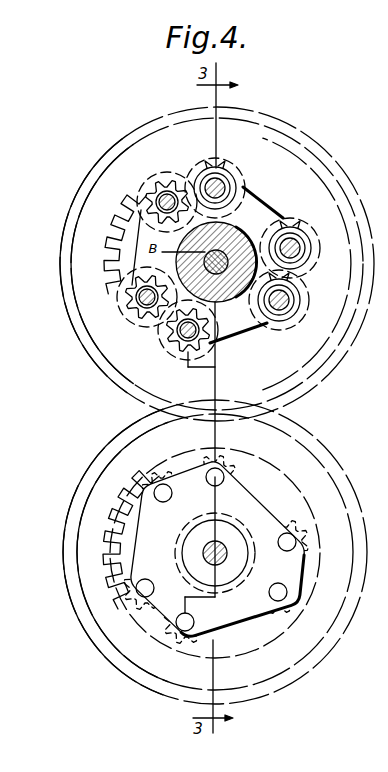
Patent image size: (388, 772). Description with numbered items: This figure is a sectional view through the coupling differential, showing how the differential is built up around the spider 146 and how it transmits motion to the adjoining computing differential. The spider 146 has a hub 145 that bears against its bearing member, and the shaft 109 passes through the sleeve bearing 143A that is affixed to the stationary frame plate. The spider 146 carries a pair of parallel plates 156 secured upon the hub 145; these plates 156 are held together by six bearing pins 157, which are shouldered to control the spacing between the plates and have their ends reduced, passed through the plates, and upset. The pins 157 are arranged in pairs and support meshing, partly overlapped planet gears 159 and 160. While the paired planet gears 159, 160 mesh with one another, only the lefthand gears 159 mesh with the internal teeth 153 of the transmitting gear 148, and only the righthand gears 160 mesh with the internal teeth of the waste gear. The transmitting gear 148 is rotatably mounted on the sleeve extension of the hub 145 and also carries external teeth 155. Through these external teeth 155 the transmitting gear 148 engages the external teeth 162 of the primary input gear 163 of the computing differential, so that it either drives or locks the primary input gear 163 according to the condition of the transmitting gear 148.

The shaft 109 is at (203, 548).
The sleeve bearing 143A is at (243, 562).
The hub 145 is at (223, 283).
The spider 146 is at (263, 198).
The transmitting gear 148 is at (73, 238).
The internal teeth 153 is at (110, 258).
The external teeth 155 is at (80, 189).
The parallel plates 156 is at (320, 206).
The bearing pins 157 is at (173, 335).
The planet gears 159 is at (222, 170).
The planet gears 160 is at (164, 178).
The external teeth 162 is at (66, 532).
The primary input gear 163 is at (92, 477).